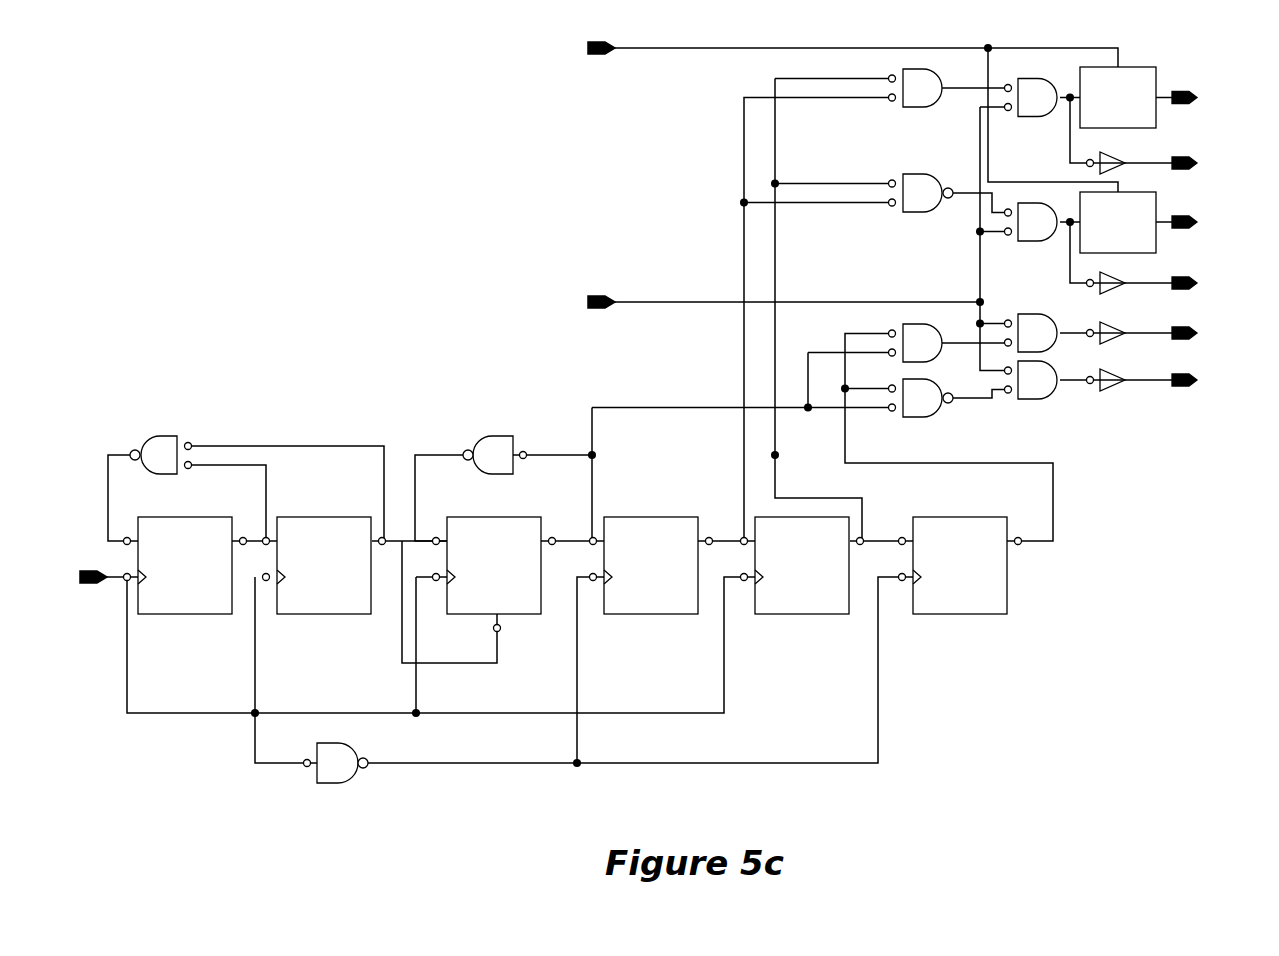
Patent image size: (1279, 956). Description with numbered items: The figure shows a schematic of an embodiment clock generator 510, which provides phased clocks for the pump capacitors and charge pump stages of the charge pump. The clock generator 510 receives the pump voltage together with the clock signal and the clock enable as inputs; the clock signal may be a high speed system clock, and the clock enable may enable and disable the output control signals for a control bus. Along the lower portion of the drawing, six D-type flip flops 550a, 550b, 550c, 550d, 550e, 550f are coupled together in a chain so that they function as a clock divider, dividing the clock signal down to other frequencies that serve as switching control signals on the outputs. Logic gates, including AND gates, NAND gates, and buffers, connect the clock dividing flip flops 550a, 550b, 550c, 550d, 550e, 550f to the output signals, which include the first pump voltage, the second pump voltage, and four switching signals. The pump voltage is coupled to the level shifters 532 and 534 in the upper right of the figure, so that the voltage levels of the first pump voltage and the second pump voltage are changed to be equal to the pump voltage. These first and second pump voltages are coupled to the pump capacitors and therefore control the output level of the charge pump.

The clock generator 510 is at (664, 410).
The level shifter 532 is at (1118, 128).
The level shifter 534 is at (1118, 253).
The D-type flip flop 550a is at (185, 614).
The D-type flip flop 550b is at (327, 614).
The D-type flip flop 550c is at (520, 614).
The D-type flip flop 550d is at (652, 614).
The D-type flip flop 550e is at (802, 614).
The D-type flip flop 550f is at (960, 614).